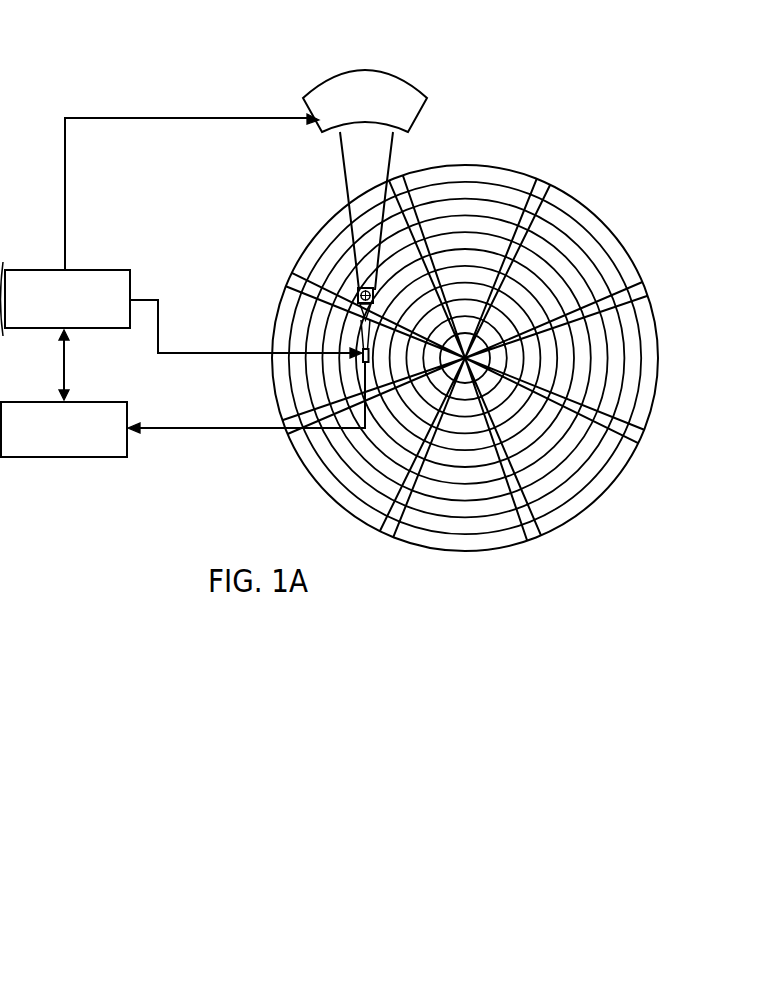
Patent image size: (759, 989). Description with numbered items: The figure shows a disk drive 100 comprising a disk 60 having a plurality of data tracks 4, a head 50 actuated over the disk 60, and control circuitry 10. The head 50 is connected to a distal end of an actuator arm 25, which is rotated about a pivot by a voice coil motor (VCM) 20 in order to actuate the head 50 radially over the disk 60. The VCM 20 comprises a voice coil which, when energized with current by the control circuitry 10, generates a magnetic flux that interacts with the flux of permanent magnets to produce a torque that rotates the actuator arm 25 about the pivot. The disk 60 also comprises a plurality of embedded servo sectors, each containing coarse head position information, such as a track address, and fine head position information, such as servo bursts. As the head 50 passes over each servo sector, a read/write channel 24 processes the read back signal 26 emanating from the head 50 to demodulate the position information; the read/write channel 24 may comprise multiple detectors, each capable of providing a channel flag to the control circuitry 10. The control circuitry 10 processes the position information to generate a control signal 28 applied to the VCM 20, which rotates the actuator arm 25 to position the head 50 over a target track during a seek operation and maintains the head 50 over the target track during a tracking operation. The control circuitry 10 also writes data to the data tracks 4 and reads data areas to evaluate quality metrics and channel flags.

The disk drive 100 is at (384, 42).
The data tracks 4 is at (472, 353).
The disk 60 is at (596, 208).
The voice coil motor 20 is at (320, 134).
The actuator arm 25 is at (350, 193).
The head 50 is at (361, 362).
The control circuitry 10 is at (101, 268).
The control signal 28 is at (62, 183).
The read/write channel 24 is at (58, 460).
The read back signal 26 is at (210, 432).